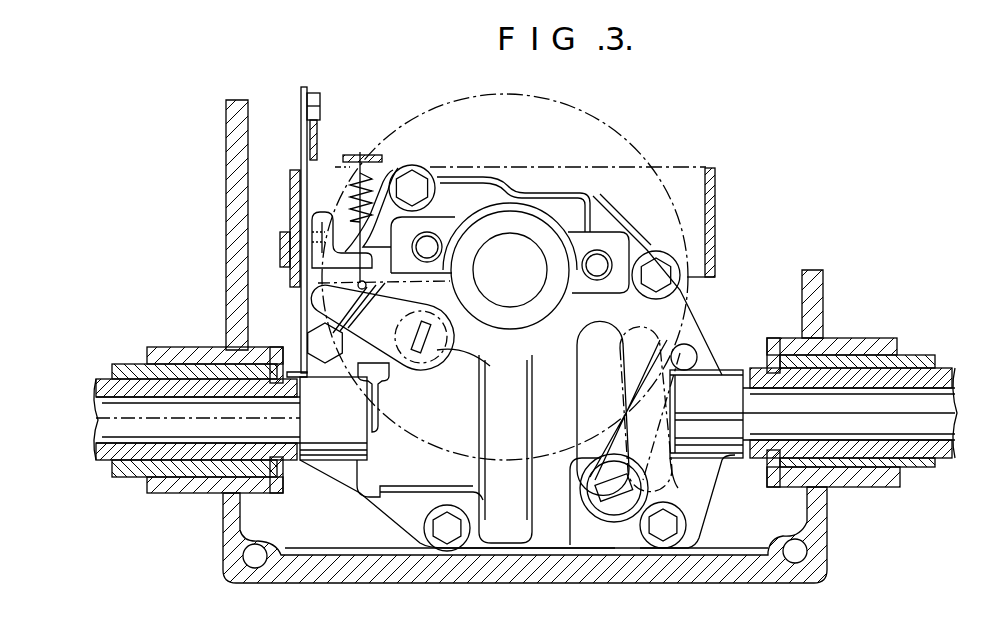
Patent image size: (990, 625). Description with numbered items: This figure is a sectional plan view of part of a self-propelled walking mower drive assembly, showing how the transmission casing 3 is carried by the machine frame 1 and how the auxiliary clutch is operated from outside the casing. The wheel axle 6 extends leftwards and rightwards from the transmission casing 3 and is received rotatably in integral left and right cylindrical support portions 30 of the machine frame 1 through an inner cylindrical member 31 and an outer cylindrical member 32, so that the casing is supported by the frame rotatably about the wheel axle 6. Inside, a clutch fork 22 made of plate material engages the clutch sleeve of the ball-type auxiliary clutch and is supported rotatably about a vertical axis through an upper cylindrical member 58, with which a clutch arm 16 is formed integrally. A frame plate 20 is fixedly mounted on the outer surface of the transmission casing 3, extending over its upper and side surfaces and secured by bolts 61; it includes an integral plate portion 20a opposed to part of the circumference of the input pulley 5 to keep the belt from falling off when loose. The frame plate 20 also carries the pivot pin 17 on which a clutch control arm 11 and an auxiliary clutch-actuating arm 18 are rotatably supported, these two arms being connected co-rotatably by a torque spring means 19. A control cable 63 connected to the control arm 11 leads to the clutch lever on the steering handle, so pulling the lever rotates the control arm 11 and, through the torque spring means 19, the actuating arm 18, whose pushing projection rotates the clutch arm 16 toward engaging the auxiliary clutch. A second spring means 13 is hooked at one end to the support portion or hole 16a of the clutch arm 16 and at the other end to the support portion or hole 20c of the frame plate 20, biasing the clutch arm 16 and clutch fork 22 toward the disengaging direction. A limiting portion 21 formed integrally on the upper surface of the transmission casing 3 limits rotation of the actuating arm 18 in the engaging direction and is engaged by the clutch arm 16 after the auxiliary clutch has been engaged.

The machine frame 1 is at (230, 513).
The transmission casing 3 is at (410, 462).
The input pulley 5 is at (618, 130).
The wheel axle 6 is at (133, 415).
The clutch control arm 11 is at (298, 145).
The second spring means 13 is at (378, 200).
The clutch arm 16 is at (325, 372).
The support portion or hole 16a is at (450, 273).
The pivot pin 17 is at (280, 247).
The auxiliary clutch-actuating arm 18 is at (410, 236).
The torque spring means 19 is at (318, 235).
The frame plate 20 is at (302, 300).
The integral plate portion 20a is at (718, 248).
The support portion or hole 20c is at (365, 150).
The limiting portion 21 is at (385, 386).
The clutch fork 22 is at (462, 345).
The cylindrical support portions 30 is at (170, 485).
The inner cylindrical member 31 is at (155, 390).
The outer cylindrical member 32 is at (173, 368).
The upper cylindrical member 58 is at (481, 392).
The bolts 61 is at (300, 417).
The control cable 63 is at (319, 125).